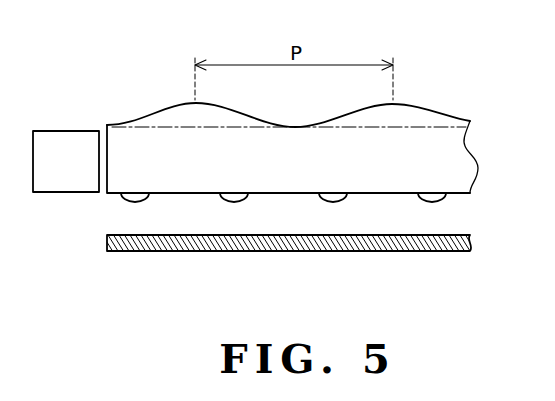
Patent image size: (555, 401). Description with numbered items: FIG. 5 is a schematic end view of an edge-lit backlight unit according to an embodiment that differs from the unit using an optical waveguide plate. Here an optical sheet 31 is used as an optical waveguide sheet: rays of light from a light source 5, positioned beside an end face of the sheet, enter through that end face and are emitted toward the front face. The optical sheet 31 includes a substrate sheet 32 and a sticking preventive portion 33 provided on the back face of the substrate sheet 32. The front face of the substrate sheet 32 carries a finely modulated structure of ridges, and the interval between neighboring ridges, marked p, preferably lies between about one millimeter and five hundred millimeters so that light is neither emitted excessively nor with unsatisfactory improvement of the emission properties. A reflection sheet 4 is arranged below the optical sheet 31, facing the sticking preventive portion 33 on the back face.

The reflection sheet 4 is at (470, 241).
The light source 5 is at (65, 140).
The optical sheet 31 is at (331, 136).
The substrate sheet 32 is at (468, 161).
The sticking preventive portion 33 is at (445, 202).